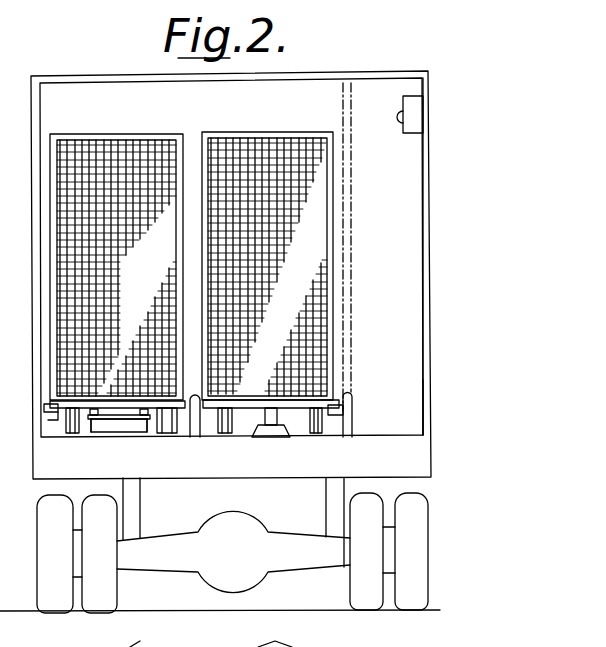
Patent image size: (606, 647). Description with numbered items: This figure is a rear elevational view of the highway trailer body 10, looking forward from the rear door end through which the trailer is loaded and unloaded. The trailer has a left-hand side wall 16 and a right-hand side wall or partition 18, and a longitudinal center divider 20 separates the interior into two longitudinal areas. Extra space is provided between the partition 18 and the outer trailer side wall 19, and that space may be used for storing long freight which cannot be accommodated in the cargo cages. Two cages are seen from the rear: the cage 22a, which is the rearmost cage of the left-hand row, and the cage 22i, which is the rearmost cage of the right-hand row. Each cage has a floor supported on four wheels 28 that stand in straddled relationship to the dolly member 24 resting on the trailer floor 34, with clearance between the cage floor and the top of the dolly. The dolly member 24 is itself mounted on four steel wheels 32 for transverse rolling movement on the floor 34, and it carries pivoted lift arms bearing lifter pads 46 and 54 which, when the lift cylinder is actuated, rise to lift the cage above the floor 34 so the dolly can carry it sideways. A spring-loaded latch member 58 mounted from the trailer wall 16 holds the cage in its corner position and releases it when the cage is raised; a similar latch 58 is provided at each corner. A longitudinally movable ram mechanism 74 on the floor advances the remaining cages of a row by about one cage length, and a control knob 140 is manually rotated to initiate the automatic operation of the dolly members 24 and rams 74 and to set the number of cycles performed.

The highway trailer body 10 is at (339, 64).
The left-hand side wall 16 is at (38, 270).
The right-hand side wall 18 is at (352, 316).
The outer trailer side wall 19 is at (423, 337).
The control knob 140 is at (398, 120).
The cargo cage 22a is at (125, 134).
The cargo cage 22i is at (275, 134).
The wheels 28 is at (66, 433).
The dolly member 24 is at (116, 438).
The steel wheels 32 is at (98, 432).
The lifter pad 46 is at (93, 409).
The lifter pad 54 is at (146, 409).
The longitudinal center divider 20 is at (197, 428).
The ram mechanism 74 is at (265, 439).
The latch member 58 is at (48, 415).
The floor 34 is at (388, 432).